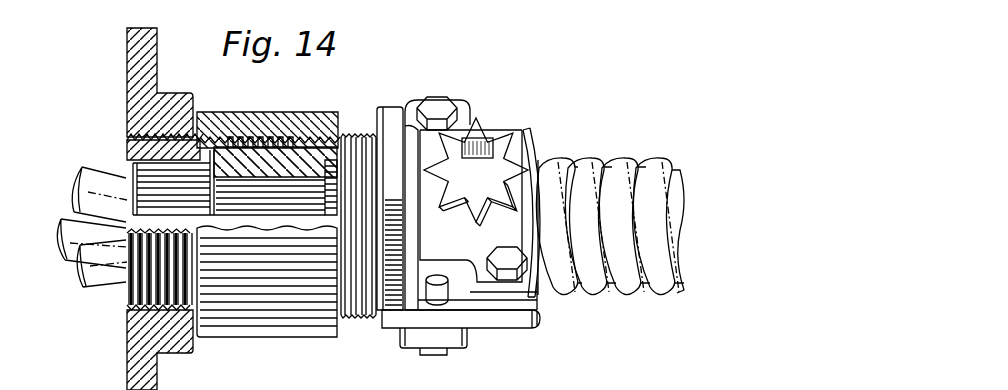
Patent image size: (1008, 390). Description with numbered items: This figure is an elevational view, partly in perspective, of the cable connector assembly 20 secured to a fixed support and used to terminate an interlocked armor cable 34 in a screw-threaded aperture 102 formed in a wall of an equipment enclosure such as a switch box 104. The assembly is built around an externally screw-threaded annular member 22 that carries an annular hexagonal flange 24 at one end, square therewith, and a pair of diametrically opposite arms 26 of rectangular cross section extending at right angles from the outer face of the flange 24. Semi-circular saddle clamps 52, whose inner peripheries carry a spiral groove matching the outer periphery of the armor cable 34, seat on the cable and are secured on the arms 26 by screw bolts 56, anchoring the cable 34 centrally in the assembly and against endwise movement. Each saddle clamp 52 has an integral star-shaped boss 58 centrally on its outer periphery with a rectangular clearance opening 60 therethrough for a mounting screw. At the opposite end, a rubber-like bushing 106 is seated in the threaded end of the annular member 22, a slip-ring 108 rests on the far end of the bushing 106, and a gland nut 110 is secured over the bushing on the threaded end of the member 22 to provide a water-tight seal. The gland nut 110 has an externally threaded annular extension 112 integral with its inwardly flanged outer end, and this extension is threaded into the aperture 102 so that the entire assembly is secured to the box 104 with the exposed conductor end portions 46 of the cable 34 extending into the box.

The screw-threaded aperture 102 is at (158, 132).
The switch box 104 is at (135, 348).
The exposed conductor end portions 46 is at (68, 237).
The rubber-like bushing 106 is at (232, 152).
The externally threaded annular extension 112 is at (215, 158).
The slip-ring 108 is at (232, 140).
The gland nut 110 is at (280, 128).
The externally screw-threaded annular member 22 is at (355, 135).
The annular hexagonal flange 24 is at (392, 108).
The cable connector assembly 20 is at (468, 100).
The screw bolts 56 is at (437, 100).
The rectangular clearance opening 60 is at (480, 140).
The star-shaped boss 58 is at (515, 130).
The saddle clamps 52 is at (455, 342).
The arms 26 is at (530, 320).
The interlocked armor cable 34 is at (658, 290).